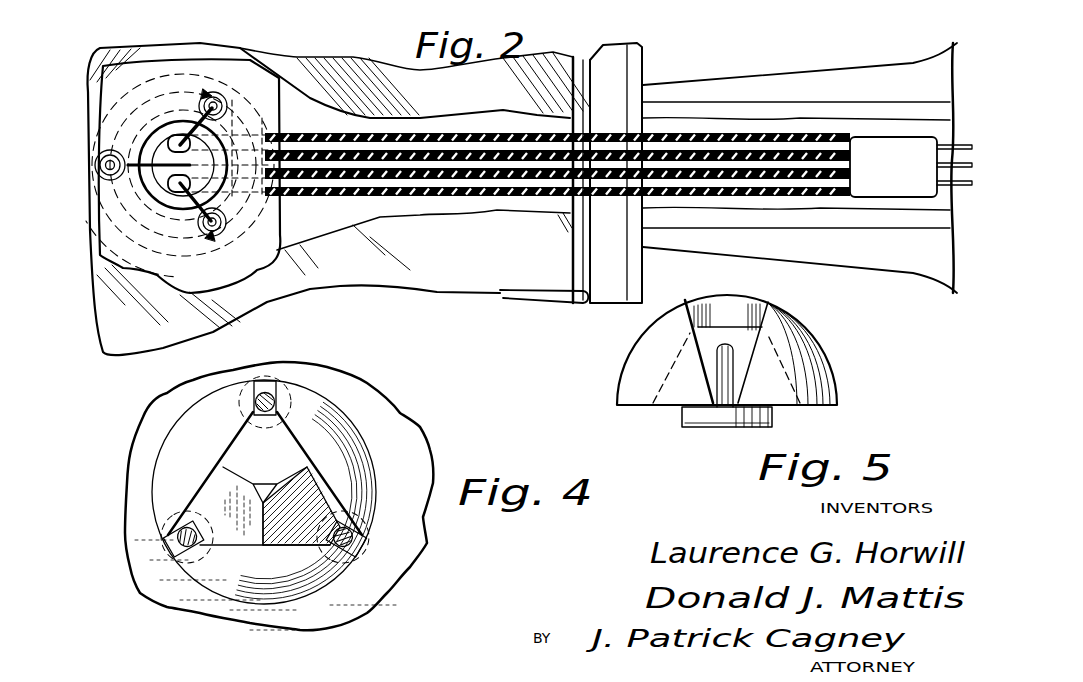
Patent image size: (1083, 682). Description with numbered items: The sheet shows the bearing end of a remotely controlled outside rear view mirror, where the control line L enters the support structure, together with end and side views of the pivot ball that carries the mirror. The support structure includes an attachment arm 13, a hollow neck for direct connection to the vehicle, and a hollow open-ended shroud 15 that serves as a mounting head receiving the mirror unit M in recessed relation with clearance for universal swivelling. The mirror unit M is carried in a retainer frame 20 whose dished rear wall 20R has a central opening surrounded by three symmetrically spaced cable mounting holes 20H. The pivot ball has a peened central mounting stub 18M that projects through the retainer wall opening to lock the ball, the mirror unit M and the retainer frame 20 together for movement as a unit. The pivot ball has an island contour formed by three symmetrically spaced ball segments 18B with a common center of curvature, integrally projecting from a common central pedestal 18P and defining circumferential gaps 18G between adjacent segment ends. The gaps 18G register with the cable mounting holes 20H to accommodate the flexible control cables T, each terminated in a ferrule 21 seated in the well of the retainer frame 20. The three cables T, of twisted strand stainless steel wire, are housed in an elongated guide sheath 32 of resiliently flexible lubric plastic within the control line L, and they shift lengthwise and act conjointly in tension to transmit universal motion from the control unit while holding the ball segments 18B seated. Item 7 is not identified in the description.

In FIG. 2, the cable mounting holes 20H is at (216, 100).
In FIG. 2, the dished rear wall 20R is at (178, 292).
In FIG. 2, the mirror unit M is at (424, 242).
In FIG. 2, the control line L is at (745, 138).
In FIG. 2, the shroud 15 is at (630, 288).
In FIG. 2, the retainer frame 20 is at (582, 304).
In FIG. 2, the attachment arm 13 is at (927, 87).
In FIG. 2, the guide sheath 32 is at (902, 171).
In FIG. 2, the leads 7 is at (957, 186).
In FIG. 4, the ball segments 18B is at (203, 415).
In FIG. 5, the ball segments 18B is at (731, 307).
In FIG. 4, the circumferential gaps 18G is at (171, 549).
In FIG. 5, the circumferential gaps 18G is at (710, 340).
In FIG. 4, the central pedestal 18P is at (287, 462).
In FIG. 5, the central pedestal 18P is at (742, 332).
In FIG. 5, the central mounting stub 18M is at (770, 413).
In FIG. 4, the ferrule 21 is at (300, 398).
In FIG. 4, the control cables T is at (287, 467).
In FIG. 5, the control cables T is at (722, 383).